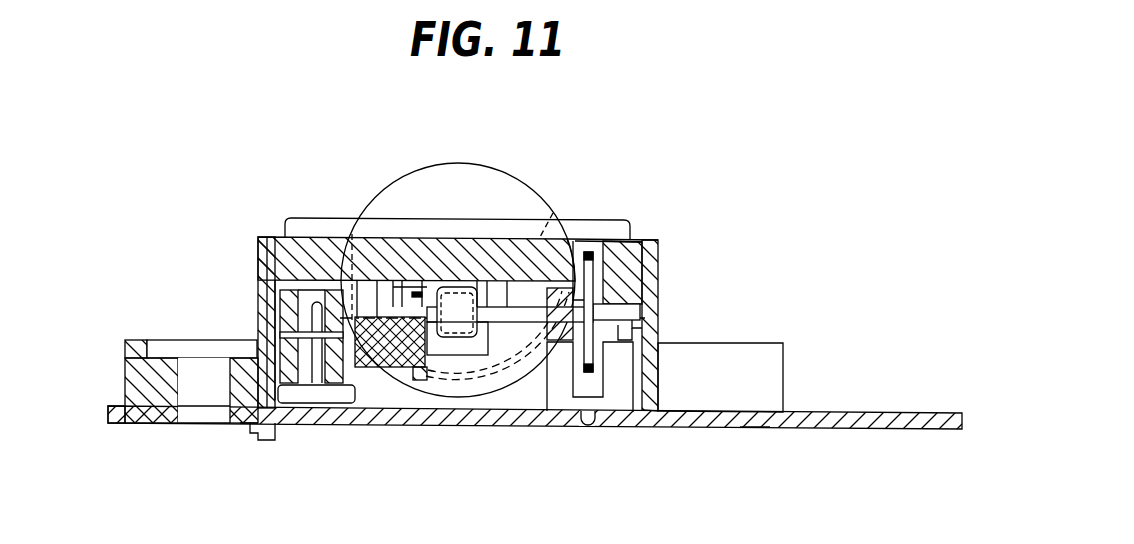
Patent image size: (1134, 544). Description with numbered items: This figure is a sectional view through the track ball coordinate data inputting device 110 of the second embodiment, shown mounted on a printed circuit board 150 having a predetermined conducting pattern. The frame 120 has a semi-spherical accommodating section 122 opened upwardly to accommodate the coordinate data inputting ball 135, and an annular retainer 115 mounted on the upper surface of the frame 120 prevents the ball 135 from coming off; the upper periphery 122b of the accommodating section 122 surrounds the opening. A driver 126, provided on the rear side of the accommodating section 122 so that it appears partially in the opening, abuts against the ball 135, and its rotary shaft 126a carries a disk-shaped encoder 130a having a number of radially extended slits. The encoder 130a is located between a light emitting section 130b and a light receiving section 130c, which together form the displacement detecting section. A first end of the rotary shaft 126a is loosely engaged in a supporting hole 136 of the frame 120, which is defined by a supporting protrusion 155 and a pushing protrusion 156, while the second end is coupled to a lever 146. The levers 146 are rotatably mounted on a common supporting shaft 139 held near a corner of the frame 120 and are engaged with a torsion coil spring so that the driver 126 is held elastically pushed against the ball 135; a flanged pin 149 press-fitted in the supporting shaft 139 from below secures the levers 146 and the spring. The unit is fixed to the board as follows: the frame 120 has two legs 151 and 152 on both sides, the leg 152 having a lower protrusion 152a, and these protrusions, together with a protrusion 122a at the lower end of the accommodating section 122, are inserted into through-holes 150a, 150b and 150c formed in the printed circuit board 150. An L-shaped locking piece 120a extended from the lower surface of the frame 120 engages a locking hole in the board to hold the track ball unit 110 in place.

The track ball coordinate data inputting device 110 is at (777, 209).
The annular retainer 115 is at (320, 225).
The frame 120 is at (270, 245).
The L-shaped locking piece 120a is at (267, 440).
The semi-spherical accommodating section 122 is at (380, 233).
The protrusion 122a is at (460, 427).
The upper periphery 122b is at (553, 213).
The driver 126 is at (457, 290).
The rotary shaft 126a is at (612, 298).
The encoder 130a is at (597, 240).
The light emitting section 130b is at (560, 362).
The light receiving section 130c is at (612, 362).
The coordinate data inputting ball 135 is at (445, 182).
The supporting hole 136 is at (625, 342).
The common supporting shaft 139 is at (267, 293).
The lever 146 is at (293, 298).
The flanged pin 149 is at (313, 396).
The printed circuit board 150 is at (900, 418).
The through-hole 150a is at (250, 435).
The through-hole 150b is at (142, 424).
The through-hole 150c is at (483, 430).
The leg 151 is at (763, 362).
The leg 152 is at (133, 347).
The lower protrusion 152a is at (170, 425).
The supporting protrusion 155 is at (636, 326).
The pushing protrusion 156 is at (610, 272).